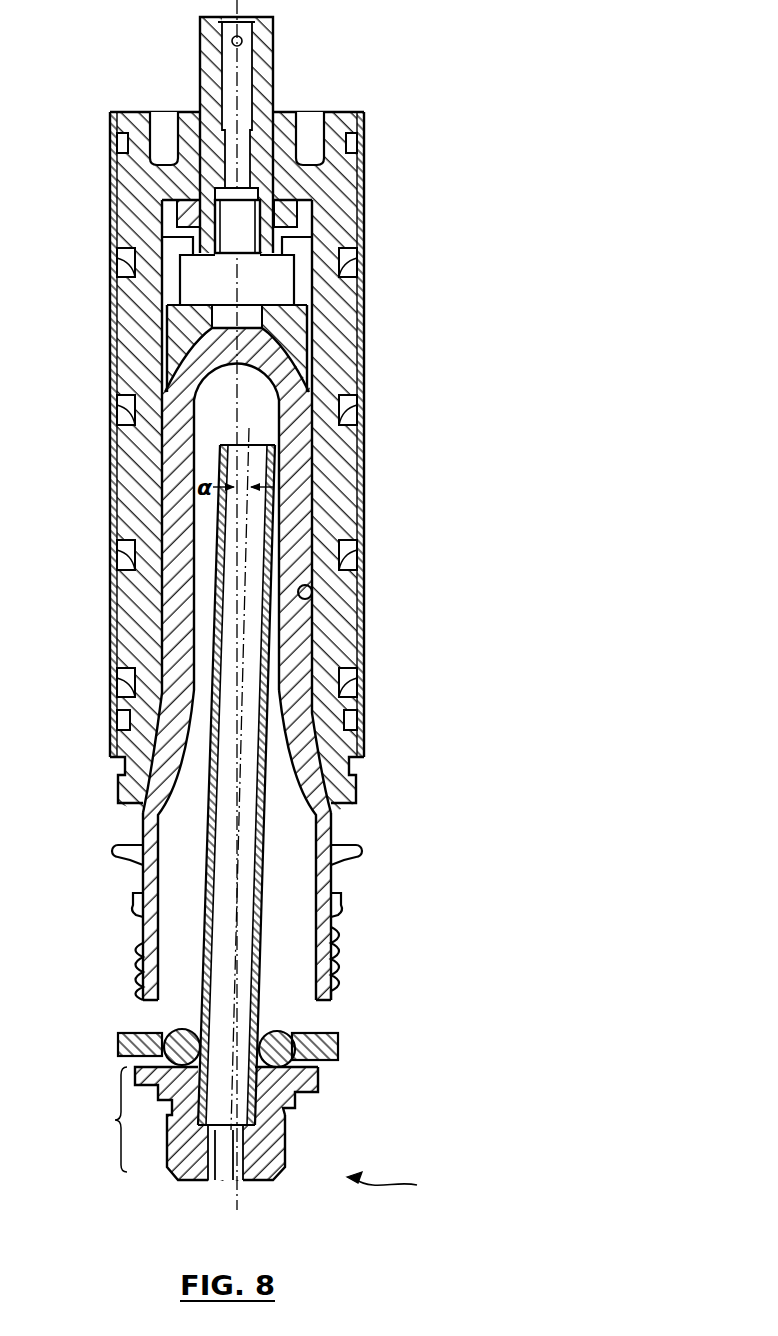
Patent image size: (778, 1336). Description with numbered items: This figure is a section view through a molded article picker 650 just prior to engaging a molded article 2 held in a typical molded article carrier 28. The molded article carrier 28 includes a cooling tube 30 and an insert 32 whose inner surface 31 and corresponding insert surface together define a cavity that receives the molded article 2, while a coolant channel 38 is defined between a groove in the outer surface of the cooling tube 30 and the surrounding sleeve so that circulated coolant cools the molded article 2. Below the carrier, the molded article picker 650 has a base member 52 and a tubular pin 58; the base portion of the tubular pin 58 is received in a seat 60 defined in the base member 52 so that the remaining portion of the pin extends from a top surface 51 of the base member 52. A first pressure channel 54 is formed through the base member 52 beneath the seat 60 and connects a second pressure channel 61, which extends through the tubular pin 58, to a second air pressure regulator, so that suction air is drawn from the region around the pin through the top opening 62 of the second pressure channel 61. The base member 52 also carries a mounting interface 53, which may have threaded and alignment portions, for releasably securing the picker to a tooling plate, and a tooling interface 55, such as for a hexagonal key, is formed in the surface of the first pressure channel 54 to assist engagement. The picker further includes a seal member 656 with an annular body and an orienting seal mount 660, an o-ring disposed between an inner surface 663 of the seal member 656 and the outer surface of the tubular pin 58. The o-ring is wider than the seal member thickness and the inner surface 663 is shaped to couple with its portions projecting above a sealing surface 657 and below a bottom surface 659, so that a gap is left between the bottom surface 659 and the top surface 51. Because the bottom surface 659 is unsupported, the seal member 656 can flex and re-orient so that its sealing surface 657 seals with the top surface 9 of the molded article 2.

The molded article carrier 28 is at (396, 120).
The cooling tube 30 is at (342, 312).
The insert 32 is at (300, 338).
The molded article 2 is at (297, 512).
The top opening 62 is at (213, 430).
The inner surface 31 is at (306, 599).
The coolant channel 38 is at (348, 681).
The second pressure channel 61 is at (250, 820).
The tubular pin 58 is at (258, 888).
The inner surface of the seal member 663 is at (325, 1000).
The top surface of the molded article 9 is at (318, 1008).
The sealing surface 657 is at (335, 1037).
The top surface of the base member 51 is at (310, 1042).
The orienting seal mount 660 is at (120, 1050).
The seal member 656 is at (340, 1050).
The bottom surface of the seal member 659 is at (323, 1063).
The mounting interface 53 is at (199, 1124).
The base member 52 is at (287, 1090).
The seat 60 is at (250, 1123).
The first pressure channel 54 is at (215, 1163).
The tooling interface 55 is at (243, 1163).
The molded article picker 650 is at (404, 1189).